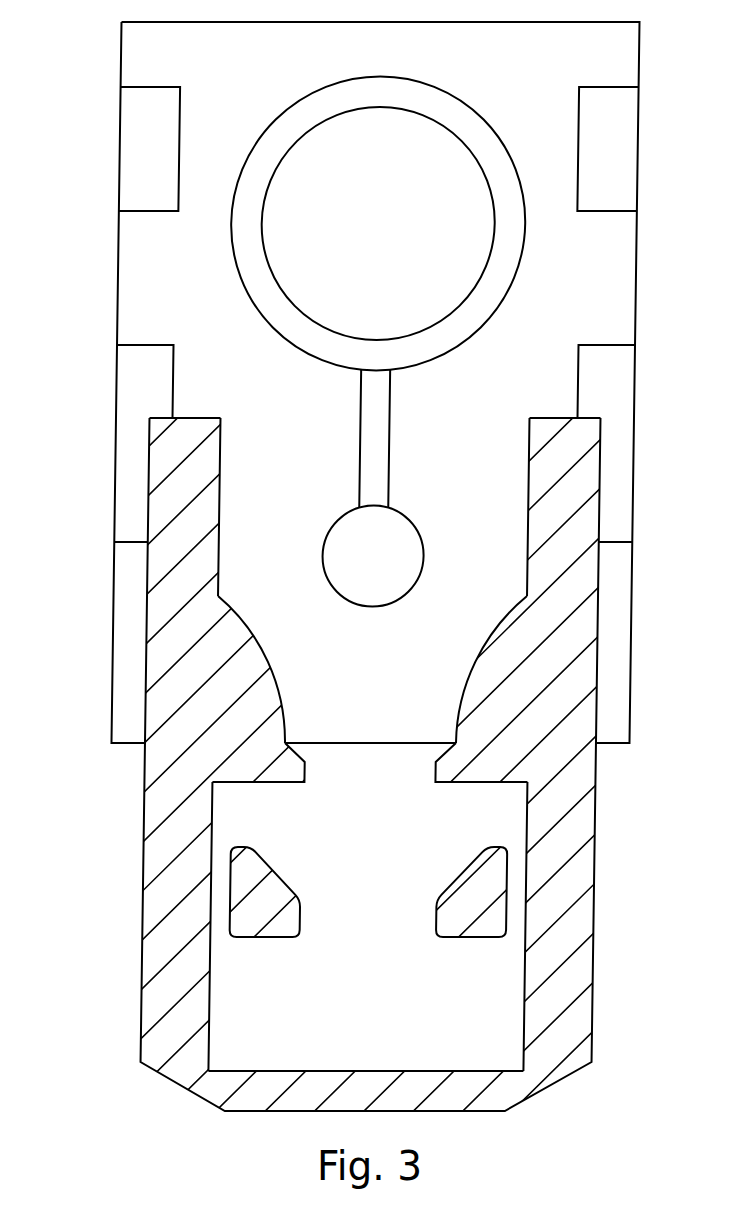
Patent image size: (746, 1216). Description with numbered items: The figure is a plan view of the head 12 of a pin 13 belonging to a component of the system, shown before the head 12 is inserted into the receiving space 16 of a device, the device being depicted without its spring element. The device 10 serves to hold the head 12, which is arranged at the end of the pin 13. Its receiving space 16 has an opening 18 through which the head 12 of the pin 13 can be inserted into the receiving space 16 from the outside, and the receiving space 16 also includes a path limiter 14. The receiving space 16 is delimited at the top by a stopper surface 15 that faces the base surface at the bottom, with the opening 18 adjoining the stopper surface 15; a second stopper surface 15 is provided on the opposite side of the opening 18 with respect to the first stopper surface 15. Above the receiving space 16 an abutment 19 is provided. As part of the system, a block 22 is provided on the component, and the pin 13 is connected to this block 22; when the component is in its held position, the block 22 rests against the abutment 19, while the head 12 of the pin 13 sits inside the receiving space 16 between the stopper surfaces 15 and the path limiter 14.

The housing 10 is at (450, 1093).
The head 12 is at (375, 553).
The pin 13 is at (371, 423).
The path limiter 14 is at (264, 917).
The stopper surface 15 is at (249, 790).
The receiving space 16 is at (265, 1037).
The opening 18 is at (370, 790).
The abutment 19 is at (273, 724).
The block 22 is at (248, 247).